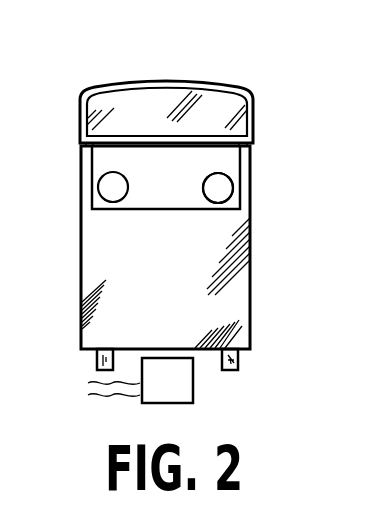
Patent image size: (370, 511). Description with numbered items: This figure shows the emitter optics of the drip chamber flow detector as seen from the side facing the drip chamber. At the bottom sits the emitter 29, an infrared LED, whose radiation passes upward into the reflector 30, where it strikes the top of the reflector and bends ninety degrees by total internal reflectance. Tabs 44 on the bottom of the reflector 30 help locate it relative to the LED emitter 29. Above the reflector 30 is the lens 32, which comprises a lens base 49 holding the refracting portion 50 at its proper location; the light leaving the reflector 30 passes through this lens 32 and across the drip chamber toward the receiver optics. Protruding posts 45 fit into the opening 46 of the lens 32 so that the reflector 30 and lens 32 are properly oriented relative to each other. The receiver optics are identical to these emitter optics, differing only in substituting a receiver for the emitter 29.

The emitter 29 is at (178, 392).
The reflector 30 is at (238, 267).
The lens 32 is at (198, 118).
The tabs 44 is at (97, 360).
The protruding posts 45 is at (222, 193).
The opening 46 is at (223, 173).
The lens base 49 is at (162, 187).
The refracting portion 50 is at (133, 118).